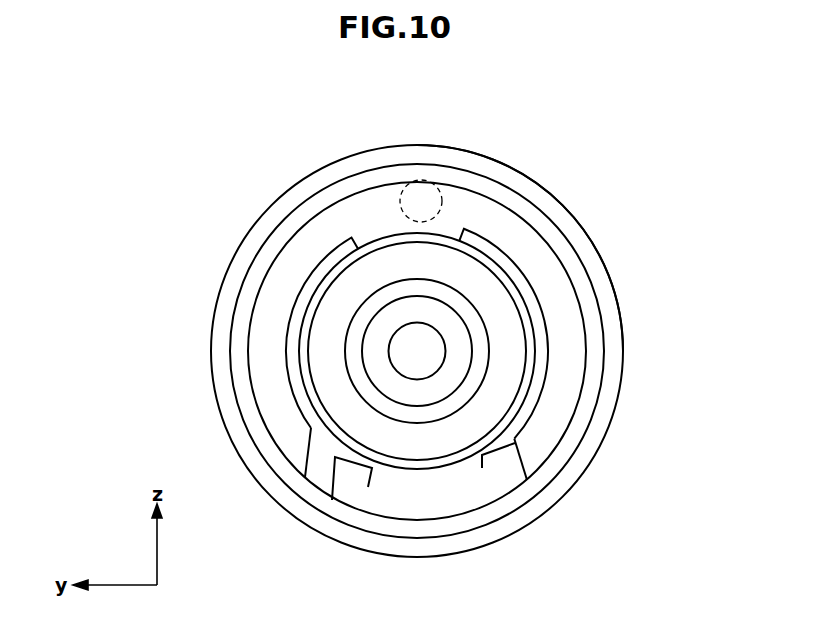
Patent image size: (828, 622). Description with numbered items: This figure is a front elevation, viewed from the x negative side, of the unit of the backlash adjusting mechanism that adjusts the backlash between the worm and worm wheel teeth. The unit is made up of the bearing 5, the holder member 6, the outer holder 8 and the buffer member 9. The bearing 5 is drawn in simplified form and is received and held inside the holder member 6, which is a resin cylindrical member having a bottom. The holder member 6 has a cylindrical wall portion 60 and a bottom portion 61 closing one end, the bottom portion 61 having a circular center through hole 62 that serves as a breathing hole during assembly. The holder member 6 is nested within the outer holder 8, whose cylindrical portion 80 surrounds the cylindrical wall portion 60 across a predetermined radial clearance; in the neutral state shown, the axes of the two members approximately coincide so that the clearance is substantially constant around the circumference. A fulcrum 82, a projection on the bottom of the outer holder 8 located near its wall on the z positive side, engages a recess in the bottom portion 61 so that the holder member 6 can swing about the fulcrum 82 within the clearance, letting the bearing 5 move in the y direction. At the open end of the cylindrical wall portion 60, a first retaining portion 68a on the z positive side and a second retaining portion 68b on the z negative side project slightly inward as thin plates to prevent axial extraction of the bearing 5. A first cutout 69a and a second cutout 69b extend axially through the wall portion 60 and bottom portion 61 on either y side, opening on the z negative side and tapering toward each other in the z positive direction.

The bearing 5 is at (500, 383).
The holder member 6 is at (318, 209).
The outer holder 8 is at (471, 149).
The buffer member 9 is at (322, 477).
The cylindrical wall portion 60 is at (568, 365).
The bottom portion 61 is at (462, 352).
The through hole 62 is at (410, 342).
The first retaining portion 68a is at (452, 228).
The second retaining portion 68b is at (435, 475).
The first cutout 69a is at (542, 448).
The second cutout 69b is at (313, 478).
The cylindrical portion 80 is at (570, 213).
The fulcrum 82 is at (420, 197).